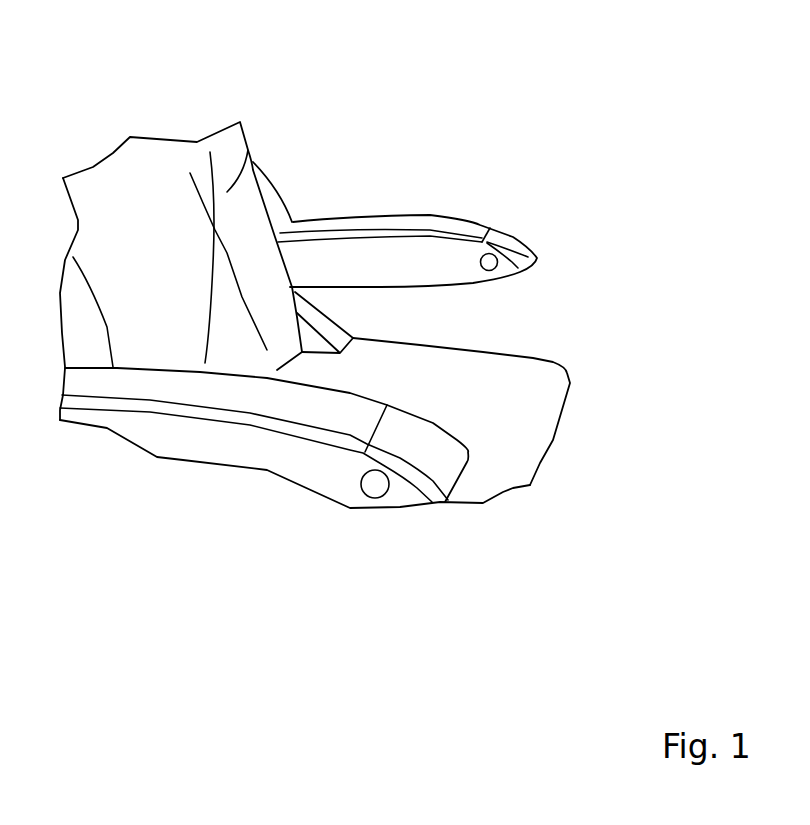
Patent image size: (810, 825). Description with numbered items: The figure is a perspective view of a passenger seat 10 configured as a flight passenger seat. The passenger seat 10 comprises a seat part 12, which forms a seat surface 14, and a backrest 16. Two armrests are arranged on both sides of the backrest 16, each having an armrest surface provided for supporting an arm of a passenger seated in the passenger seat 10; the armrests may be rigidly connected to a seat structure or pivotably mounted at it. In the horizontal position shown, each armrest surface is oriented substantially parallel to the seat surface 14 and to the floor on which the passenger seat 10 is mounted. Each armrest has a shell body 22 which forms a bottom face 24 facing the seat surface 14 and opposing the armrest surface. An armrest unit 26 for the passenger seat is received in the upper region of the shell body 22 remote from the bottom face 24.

The passenger seat 10 is at (396, 305).
The seat part 12 is at (396, 446).
The seat surface 14 is at (485, 373).
The backrest 16 is at (248, 150).
The shell body 22 is at (307, 463).
The bottom face 24 is at (420, 287).
The armrest unit 26 is at (202, 388).